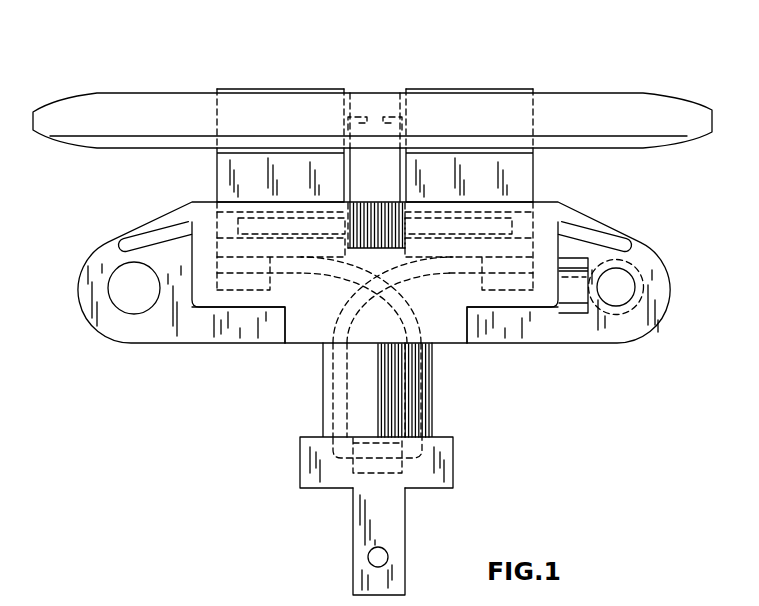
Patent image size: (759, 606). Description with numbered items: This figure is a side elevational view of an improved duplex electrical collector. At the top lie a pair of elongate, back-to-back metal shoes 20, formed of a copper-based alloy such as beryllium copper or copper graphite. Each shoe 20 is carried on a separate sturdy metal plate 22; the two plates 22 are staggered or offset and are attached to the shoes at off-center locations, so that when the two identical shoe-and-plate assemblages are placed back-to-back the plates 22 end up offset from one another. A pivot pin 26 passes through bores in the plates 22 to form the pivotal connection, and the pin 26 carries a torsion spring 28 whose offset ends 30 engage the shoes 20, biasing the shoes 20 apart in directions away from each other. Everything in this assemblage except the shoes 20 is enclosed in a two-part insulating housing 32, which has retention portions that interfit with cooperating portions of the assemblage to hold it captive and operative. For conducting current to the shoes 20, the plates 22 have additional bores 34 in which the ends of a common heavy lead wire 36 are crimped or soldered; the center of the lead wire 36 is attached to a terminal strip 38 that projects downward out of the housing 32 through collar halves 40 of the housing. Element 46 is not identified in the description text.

The metal shoes 20 is at (681, 124).
The metal plates 22 is at (217, 181).
The pivot pin 26 is at (466, 215).
The torsion spring 28 is at (370, 225).
The offset ends 30 is at (391, 112).
The insulating housing 32 is at (590, 442).
The additional bores 34 is at (192, 344).
The lead wire 36 is at (410, 243).
The terminal strip 38 is at (366, 540).
The collar halves 40 is at (322, 398).
The slot 46 is at (238, 232).